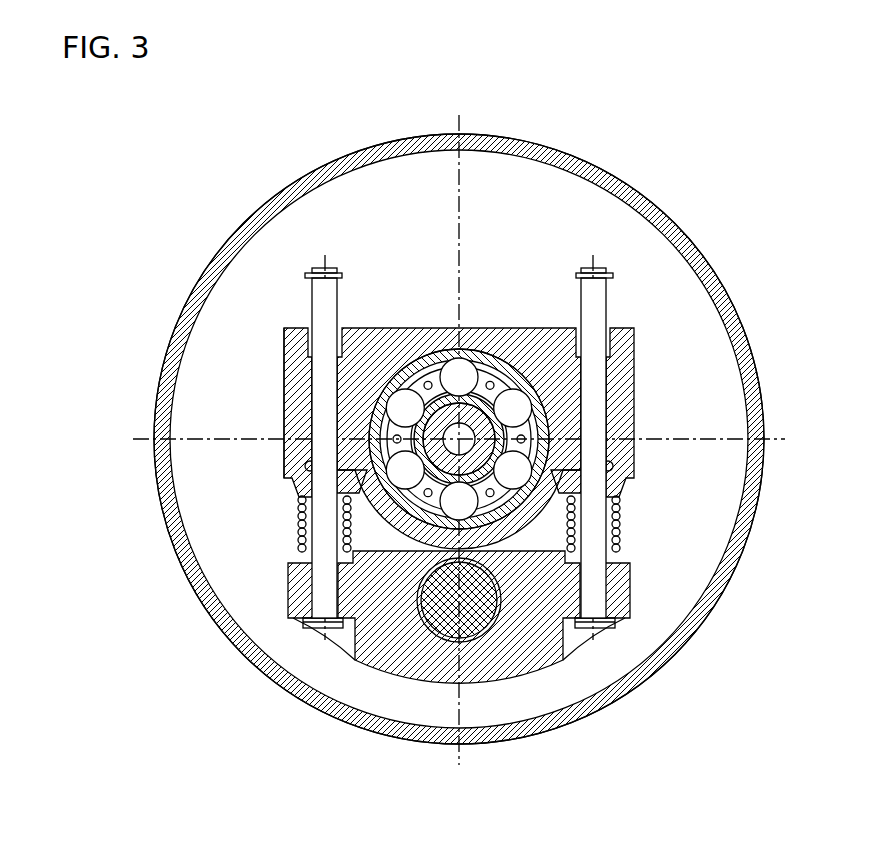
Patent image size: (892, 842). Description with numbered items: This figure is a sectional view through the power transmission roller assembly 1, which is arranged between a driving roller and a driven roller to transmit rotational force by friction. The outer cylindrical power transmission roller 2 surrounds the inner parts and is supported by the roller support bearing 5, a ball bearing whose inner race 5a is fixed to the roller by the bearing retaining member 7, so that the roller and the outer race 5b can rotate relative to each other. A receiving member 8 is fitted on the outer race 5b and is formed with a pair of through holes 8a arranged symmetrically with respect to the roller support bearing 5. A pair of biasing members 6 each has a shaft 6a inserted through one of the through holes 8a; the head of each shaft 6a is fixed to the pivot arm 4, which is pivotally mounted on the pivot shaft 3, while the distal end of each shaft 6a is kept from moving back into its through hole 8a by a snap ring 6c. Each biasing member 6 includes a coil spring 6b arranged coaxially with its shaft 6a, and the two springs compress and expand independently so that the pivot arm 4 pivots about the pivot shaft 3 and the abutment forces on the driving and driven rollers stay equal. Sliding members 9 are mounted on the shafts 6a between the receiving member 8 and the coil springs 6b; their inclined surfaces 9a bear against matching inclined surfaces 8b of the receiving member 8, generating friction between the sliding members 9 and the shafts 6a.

The power transmission roller assembly 1 is at (550, 141).
The power transmission roller 2 is at (657, 212).
The pivot shaft 3 is at (445, 613).
The pivot arm 4 is at (535, 638).
The roller support bearing 5 is at (503, 355).
The inner race 5a is at (474, 410).
The outer race 5b is at (388, 362).
The biasing members 6 is at (270, 505).
The shaft 6a is at (320, 548).
The coil spring 6b is at (300, 526).
The snap ring 6c is at (318, 276).
The bearing retaining member 7 is at (440, 360).
The receiving member 8 is at (626, 416).
The through holes 8a is at (310, 370).
The inclined surfaces 8b is at (308, 455).
The sliding members 9 is at (628, 480).
The inclined surfaces 9a is at (305, 478).